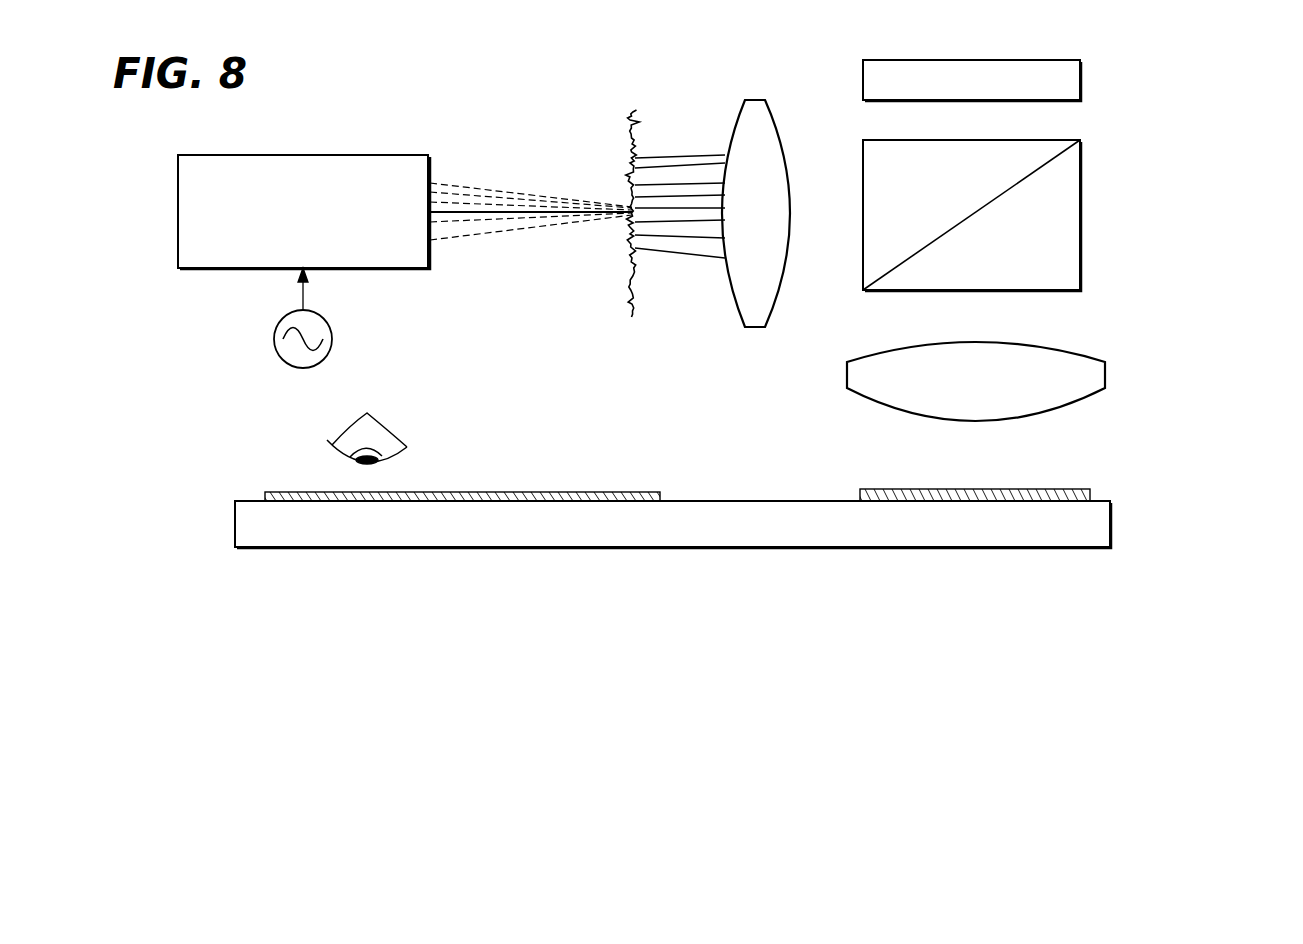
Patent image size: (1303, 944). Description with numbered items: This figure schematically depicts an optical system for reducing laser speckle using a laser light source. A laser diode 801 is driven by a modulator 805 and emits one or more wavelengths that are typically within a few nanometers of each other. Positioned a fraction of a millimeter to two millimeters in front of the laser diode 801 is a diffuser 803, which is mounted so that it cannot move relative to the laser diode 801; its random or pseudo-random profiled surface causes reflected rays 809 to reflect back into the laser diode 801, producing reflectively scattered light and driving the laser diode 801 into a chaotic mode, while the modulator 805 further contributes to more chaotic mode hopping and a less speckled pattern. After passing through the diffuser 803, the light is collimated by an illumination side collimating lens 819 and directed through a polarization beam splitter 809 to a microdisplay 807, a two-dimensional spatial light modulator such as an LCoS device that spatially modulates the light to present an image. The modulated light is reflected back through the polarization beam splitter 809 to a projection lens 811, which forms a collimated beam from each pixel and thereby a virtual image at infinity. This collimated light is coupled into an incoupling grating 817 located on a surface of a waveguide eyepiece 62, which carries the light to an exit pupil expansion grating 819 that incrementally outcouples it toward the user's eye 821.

The laser diode 801 is at (320, 252).
The diffuser 803 is at (616, 108).
The modulator 805 is at (273, 339).
The microdisplay 807 is at (1040, 96).
The polarization beam splitter 809 is at (502, 228).
The projection lens 811 is at (1062, 387).
The incoupling grating 817 is at (1083, 489).
The collimating lens 819 is at (760, 308).
The user's eye 821 is at (330, 442).
The waveguide eyepiece 62 is at (781, 537).